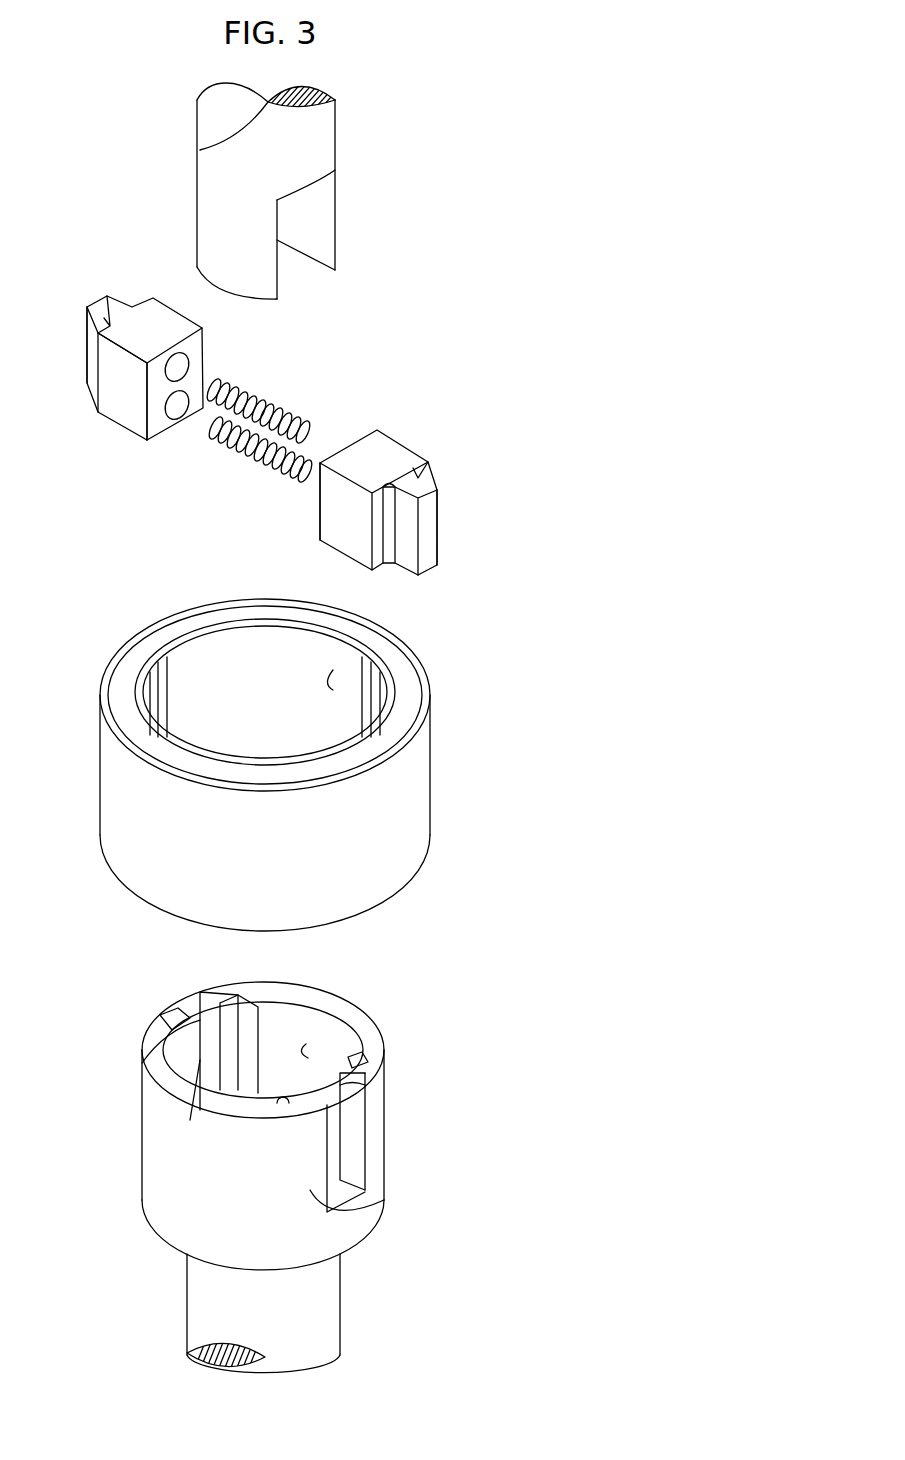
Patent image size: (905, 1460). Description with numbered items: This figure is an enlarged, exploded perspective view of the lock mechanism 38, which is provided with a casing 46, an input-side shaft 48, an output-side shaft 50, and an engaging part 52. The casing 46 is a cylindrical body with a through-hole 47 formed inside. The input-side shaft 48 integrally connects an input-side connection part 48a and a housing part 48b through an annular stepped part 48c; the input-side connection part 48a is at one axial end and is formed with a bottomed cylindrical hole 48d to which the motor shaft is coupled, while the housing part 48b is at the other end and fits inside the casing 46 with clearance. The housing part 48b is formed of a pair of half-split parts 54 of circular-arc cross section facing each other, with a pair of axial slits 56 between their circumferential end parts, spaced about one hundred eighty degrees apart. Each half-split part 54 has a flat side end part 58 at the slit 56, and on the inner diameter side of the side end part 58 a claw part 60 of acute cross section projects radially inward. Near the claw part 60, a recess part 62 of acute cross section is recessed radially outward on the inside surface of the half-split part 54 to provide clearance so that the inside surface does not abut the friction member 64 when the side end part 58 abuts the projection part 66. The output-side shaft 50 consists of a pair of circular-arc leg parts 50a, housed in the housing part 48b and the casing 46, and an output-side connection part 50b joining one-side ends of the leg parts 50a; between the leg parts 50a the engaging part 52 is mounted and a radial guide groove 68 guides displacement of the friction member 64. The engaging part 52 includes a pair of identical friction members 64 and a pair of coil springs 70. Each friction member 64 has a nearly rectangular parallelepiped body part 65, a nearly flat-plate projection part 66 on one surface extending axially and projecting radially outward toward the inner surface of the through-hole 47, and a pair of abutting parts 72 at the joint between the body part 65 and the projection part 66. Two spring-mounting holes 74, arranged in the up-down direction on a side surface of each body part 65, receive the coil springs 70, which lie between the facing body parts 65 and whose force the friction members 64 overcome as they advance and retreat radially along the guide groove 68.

The lock mechanism 38 is at (530, 295).
The casing 46 is at (432, 768).
The through-hole 47 is at (345, 688).
The input-side shaft 48 is at (405, 1170).
The input-side connection part 48a is at (340, 1305).
The housing part 48b is at (300, 1050).
The annular stepped part 48c is at (355, 1243).
The hole 48d is at (195, 1372).
The output-side shaft 50 is at (355, 153).
The leg part 50a is at (337, 228).
The output-side connection part 50b is at (222, 162).
The engaging part 52 is at (425, 438).
The half-split part 54 is at (305, 997).
The slit 56 is at (200, 1023).
The side end part 58 is at (200, 1010).
The claw part 60 is at (360, 1088).
The recess part 62 is at (225, 1010).
The friction member 64 is at (172, 300).
The body part 65 is at (130, 412).
The projection part 66 is at (95, 303).
The guide groove 68 is at (293, 262).
The coil spring 70 is at (270, 395).
The abutting part 72 is at (136, 305).
The spring-mounting hole 74 is at (178, 370).